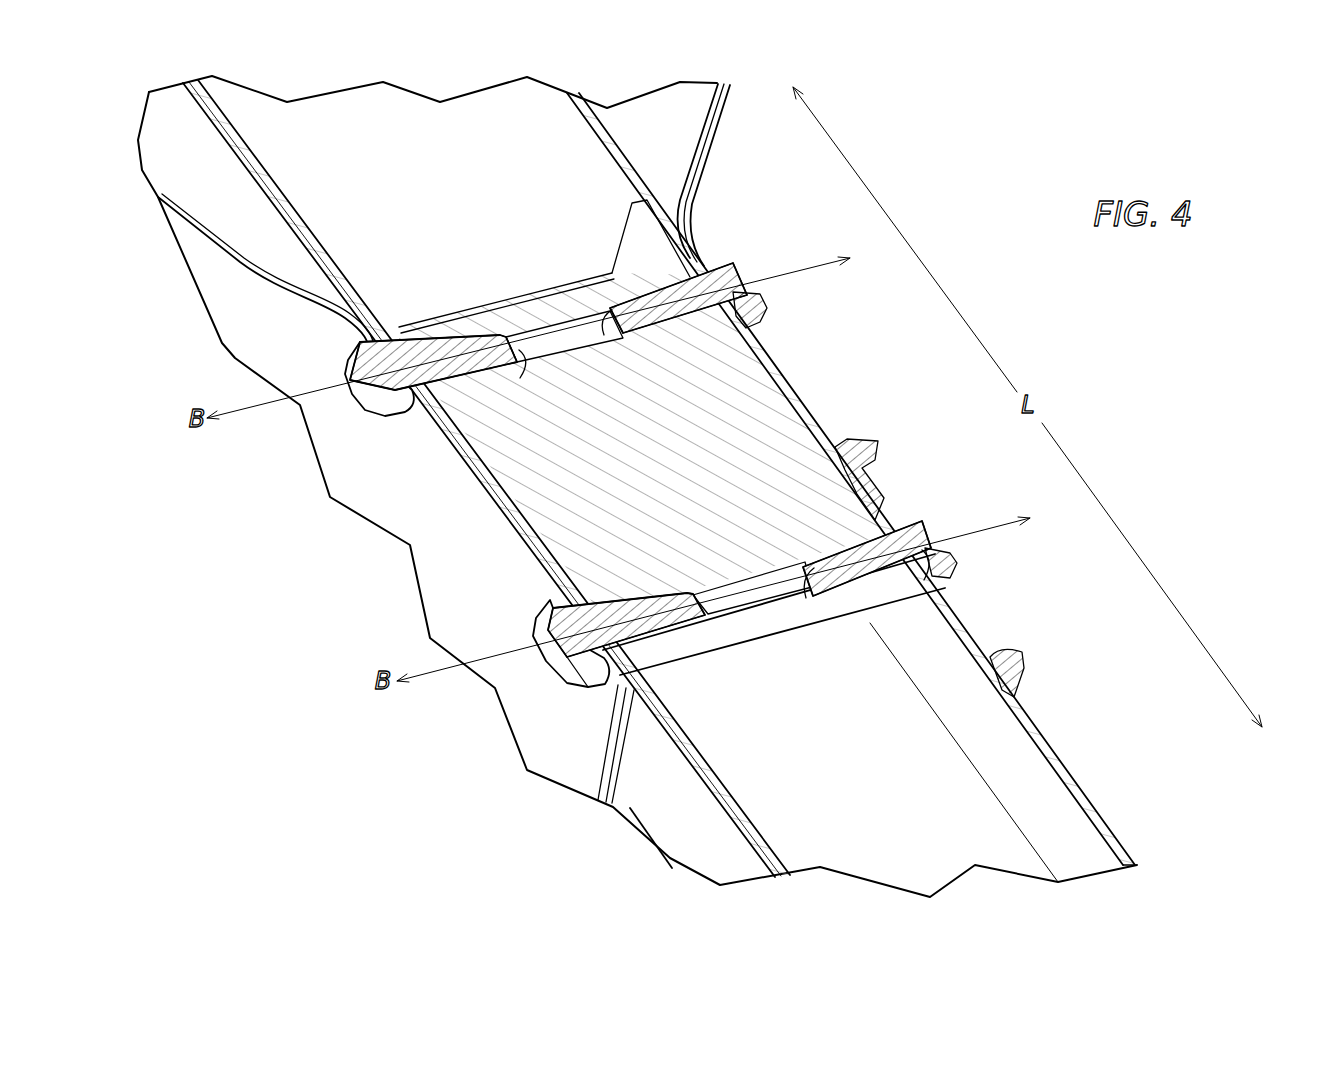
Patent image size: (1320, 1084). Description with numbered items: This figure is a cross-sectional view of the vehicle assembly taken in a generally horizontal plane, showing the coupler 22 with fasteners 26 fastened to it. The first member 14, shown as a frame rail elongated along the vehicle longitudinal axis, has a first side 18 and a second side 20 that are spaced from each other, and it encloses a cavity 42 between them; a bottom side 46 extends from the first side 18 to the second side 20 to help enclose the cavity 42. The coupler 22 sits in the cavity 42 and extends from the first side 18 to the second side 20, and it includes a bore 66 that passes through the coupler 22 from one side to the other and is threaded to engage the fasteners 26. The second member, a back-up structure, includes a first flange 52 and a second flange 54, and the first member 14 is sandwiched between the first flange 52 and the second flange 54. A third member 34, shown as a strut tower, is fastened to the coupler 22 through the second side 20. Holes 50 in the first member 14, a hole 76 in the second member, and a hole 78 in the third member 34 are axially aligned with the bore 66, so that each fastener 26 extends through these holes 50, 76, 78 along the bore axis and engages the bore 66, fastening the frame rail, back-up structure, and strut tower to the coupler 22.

The first member 14 is at (1063, 760).
The first side 18 is at (822, 433).
The second side 20 is at (487, 480).
The coupler 22 is at (707, 668).
The fastener 26 is at (352, 360).
The third member 34 is at (973, 622).
The cavity 42 is at (973, 817).
The bottom side 46 is at (883, 842).
The hole 50 is at (700, 307).
The first flange 52 is at (703, 193).
The second flange 54 is at (262, 278).
The bore 66 is at (563, 335).
The hole 76 is at (397, 418).
The hole 78 is at (938, 555).